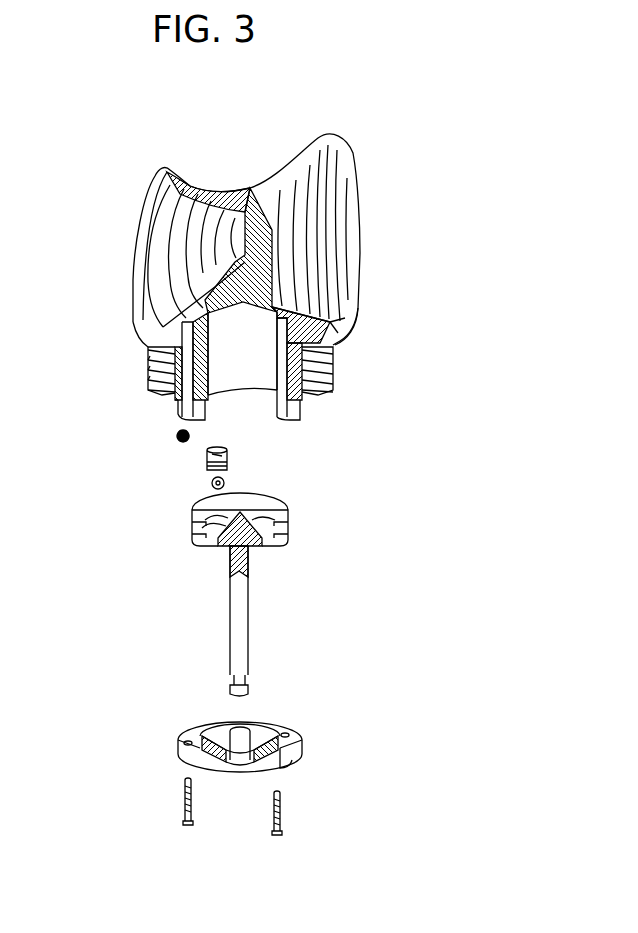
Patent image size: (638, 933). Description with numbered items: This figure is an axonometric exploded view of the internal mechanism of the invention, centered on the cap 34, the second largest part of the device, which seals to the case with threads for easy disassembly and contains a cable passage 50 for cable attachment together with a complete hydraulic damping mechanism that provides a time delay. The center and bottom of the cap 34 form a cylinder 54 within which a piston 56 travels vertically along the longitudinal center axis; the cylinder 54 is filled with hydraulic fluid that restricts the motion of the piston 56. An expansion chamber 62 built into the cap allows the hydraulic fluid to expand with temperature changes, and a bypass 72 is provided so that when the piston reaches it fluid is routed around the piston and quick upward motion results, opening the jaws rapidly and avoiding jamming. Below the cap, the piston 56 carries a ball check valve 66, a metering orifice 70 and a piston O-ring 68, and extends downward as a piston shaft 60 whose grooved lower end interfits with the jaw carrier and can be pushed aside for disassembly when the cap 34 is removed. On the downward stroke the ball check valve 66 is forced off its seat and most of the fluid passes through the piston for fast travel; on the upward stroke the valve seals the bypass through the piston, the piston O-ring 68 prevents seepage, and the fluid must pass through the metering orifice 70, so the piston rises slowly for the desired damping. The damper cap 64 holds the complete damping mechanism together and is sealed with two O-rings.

The cap 34 is at (143, 214).
The cable passage 50 is at (172, 254).
The cylinder 54 is at (253, 327).
The expansion chamber 62 is at (185, 338).
The bypass 72 is at (287, 342).
The ball check valve 66 is at (212, 484).
The piston 56 is at (263, 505).
The metering orifice 70 is at (286, 518).
The piston O-ring 68 is at (287, 528).
The piston shaft 60 is at (238, 625).
The damper cap 64 is at (292, 742).